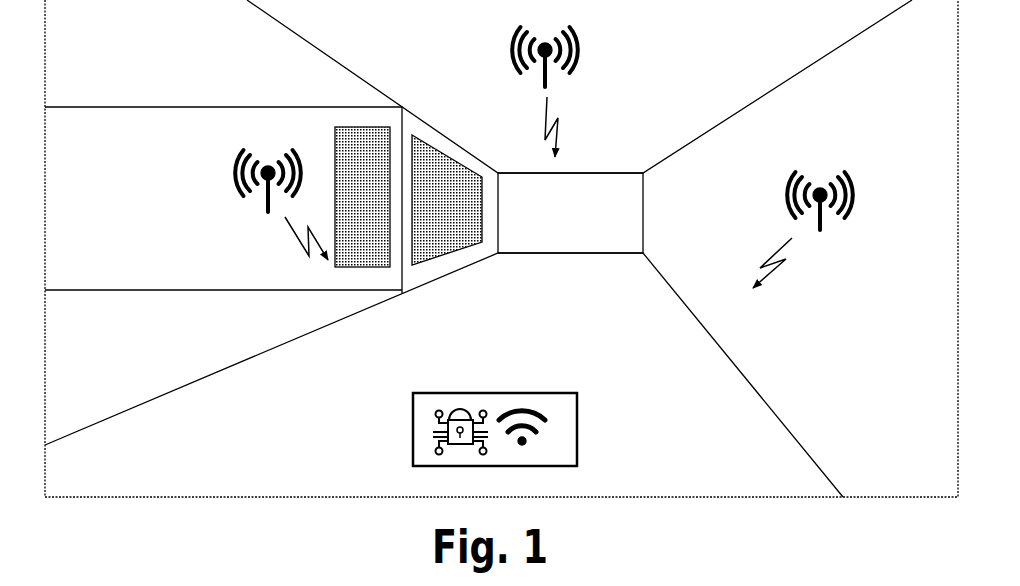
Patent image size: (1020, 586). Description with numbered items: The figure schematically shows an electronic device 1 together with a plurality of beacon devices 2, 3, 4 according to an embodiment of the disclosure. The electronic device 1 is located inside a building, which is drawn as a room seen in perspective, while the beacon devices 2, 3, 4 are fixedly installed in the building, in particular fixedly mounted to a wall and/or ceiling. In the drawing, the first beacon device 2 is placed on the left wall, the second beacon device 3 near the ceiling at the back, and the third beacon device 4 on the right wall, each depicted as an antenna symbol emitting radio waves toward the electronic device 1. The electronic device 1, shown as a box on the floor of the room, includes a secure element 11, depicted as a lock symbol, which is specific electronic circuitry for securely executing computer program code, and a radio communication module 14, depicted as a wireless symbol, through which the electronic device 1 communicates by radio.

The electronic device 1 is at (398, 396).
The beacon device 2 is at (212, 171).
The beacon device 3 is at (490, 41).
The beacon device 4 is at (766, 189).
The secure element 11 is at (447, 435).
The radio communication module 14 is at (553, 425).